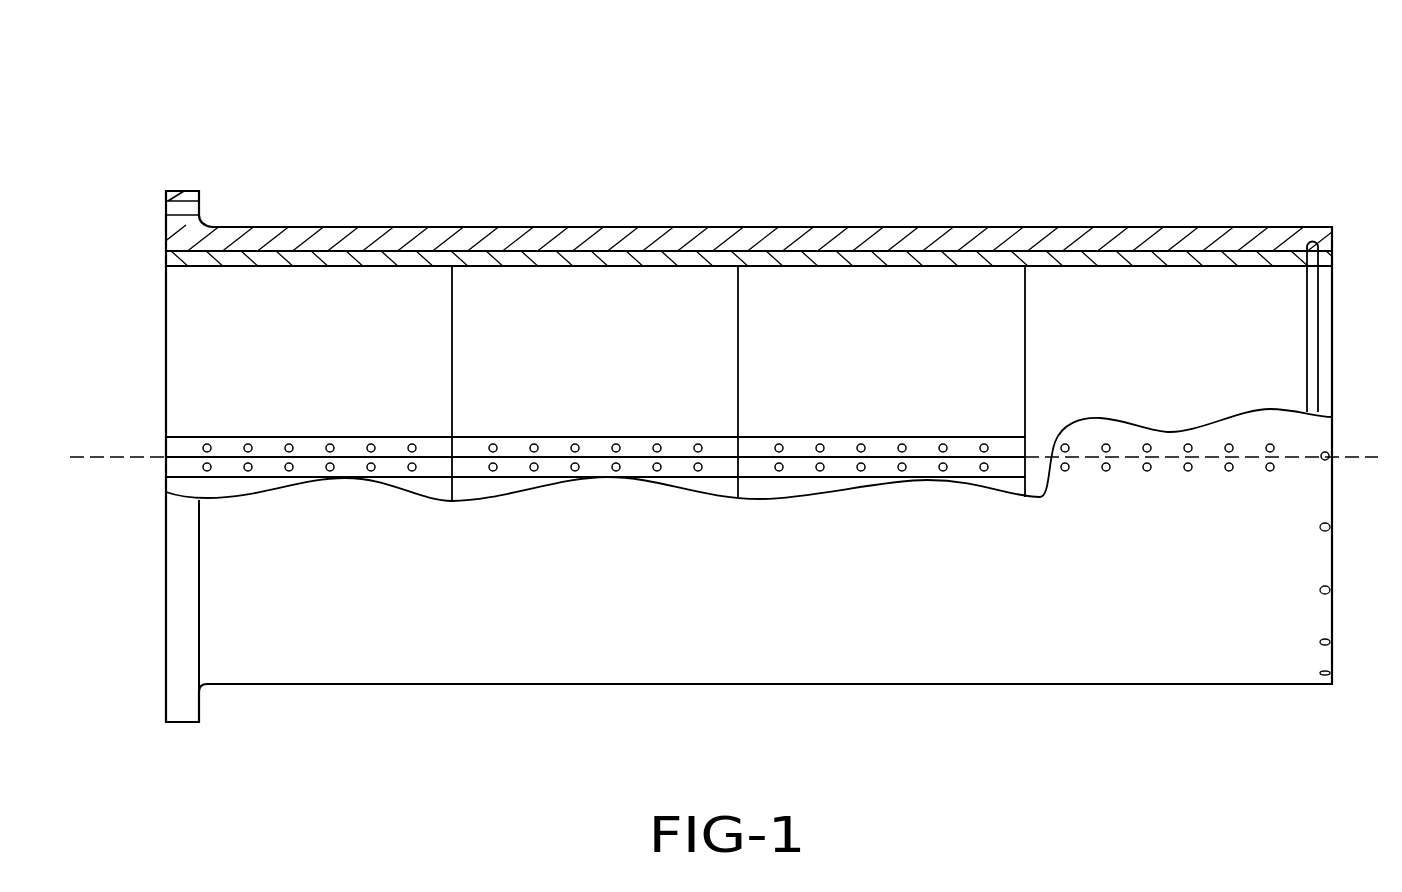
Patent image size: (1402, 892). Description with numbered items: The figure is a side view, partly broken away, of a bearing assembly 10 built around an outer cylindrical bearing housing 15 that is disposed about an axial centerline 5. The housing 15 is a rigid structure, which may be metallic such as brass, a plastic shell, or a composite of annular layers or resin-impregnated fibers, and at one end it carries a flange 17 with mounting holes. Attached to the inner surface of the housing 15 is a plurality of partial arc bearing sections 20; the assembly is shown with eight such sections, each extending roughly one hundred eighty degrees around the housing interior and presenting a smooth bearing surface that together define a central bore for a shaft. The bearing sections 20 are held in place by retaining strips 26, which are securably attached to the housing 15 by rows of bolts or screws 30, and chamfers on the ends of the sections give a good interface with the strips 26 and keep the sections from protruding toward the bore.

The bearing assembly 10 is at (566, 160).
The outer cylindrical bearing housing 15 is at (1150, 657).
The flange 17 is at (183, 695).
The partial arc bearing sections 20 is at (273, 292).
The retaining strips 26 is at (313, 447).
The bolts or screws 30 is at (207, 445).
The axial centerline 5 is at (1370, 455).